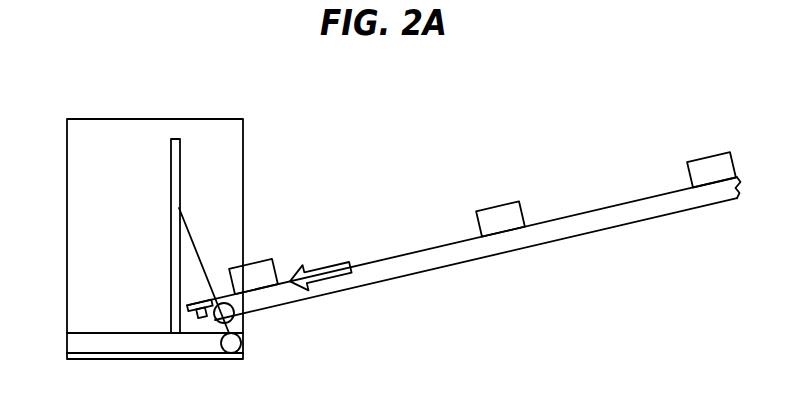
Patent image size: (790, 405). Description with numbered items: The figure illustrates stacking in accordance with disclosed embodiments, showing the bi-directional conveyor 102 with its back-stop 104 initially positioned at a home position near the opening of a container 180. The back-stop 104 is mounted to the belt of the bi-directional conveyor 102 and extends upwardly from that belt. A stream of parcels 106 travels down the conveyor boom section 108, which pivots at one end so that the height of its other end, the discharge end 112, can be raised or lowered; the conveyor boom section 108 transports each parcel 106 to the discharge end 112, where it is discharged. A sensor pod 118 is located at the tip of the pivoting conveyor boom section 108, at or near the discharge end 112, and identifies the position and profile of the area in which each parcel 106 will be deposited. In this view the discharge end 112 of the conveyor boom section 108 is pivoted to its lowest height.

The container 180 is at (122, 119).
The back-stop 104 is at (170, 172).
The bi-directional conveyor 102 is at (103, 332).
The sensor pod 118 is at (203, 309).
The discharge end 112 is at (232, 297).
The conveyor boom section 108 is at (400, 256).
The parcel 106 is at (502, 203).